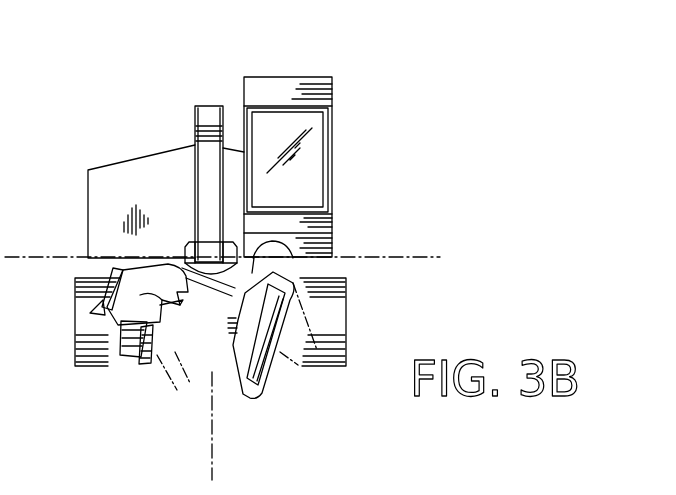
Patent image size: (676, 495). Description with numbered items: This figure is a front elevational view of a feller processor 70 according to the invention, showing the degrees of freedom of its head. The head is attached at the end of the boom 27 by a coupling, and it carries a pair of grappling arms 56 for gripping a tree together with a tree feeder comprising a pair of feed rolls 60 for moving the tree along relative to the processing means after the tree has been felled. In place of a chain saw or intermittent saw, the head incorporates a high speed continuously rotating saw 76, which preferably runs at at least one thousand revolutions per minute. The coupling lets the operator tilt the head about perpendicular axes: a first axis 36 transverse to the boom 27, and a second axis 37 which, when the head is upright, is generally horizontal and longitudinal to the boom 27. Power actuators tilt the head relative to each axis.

The boom 27 is at (207, 143).
The feller processor 70 is at (280, 74).
The first axis 36 is at (425, 254).
The second axis 37 is at (212, 467).
The grappling arms 56 is at (140, 373).
The feed rolls 60 is at (193, 377).
The high speed continuously rotating saw 76 is at (273, 377).